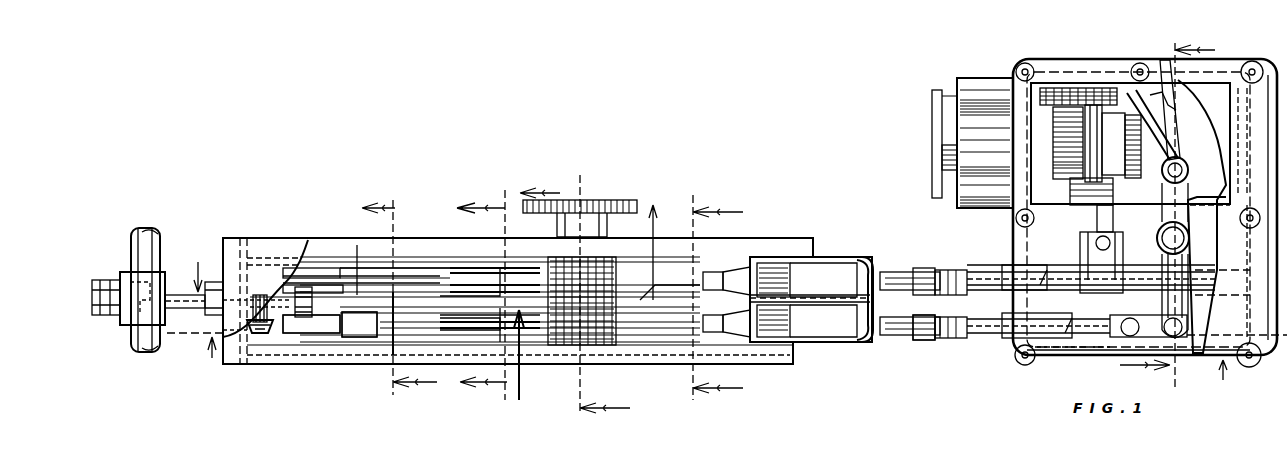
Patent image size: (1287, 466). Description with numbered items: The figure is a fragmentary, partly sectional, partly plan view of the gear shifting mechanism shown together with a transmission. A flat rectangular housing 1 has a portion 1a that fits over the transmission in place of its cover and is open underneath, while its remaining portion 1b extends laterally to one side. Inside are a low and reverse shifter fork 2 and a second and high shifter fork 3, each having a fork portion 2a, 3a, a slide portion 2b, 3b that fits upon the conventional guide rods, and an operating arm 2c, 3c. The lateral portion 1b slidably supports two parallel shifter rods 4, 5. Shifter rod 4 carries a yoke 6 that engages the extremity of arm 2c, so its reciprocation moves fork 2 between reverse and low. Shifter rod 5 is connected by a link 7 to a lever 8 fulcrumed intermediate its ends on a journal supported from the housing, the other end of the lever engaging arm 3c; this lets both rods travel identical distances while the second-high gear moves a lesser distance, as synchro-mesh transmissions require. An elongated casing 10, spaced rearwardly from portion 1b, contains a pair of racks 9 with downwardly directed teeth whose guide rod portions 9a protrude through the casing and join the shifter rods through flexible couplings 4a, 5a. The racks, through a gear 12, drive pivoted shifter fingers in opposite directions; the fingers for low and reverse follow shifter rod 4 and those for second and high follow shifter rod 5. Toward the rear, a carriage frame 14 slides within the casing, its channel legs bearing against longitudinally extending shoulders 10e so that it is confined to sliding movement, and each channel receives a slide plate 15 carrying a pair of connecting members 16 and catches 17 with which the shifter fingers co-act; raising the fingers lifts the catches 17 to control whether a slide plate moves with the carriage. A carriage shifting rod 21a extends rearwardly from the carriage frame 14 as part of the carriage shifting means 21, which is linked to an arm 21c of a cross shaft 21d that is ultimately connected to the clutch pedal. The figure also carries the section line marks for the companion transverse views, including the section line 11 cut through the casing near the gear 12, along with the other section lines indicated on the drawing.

The housing 1 is at (1005, 205).
The housing portion 1a is at (1040, 148).
The laterally disposed portion of the housing 1b is at (1080, 345).
The low and reverse shifter fork 2 is at (1065, 185).
The fork portion 2a is at (1090, 105).
The slide portion 2b is at (1093, 175).
The operating arm 2c is at (1095, 240).
The second and high shifter fork 3 is at (1200, 122).
The fork portion 3a is at (1130, 182).
The slide portion 3b is at (1176, 100).
The operating arm 3c is at (1182, 162).
The shifter rod 4 is at (985, 272).
The flexible coupling 4a is at (945, 272).
The shifter rod 5 is at (990, 322).
The flexible coupling 5a is at (945, 335).
The yoke 6 is at (1100, 275).
The link 7 is at (1150, 318).
The lever 8 is at (1190, 240).
The rack 9 is at (860, 278).
The guide rod portion 9a is at (920, 275).
The casing 10 is at (727, 301).
The longitudinally extending shoulder 10e is at (300, 345).
The gear 11 is at (579, 298).
The gear 12 is at (482, 296).
The carriage frame 14 is at (265, 320).
The slide plate 15 is at (399, 296).
The connecting member 16 is at (375, 325).
The catch 17 is at (330, 275).
The carriage shifting means 21 is at (142, 250).
The carriage shifting rod 21a is at (183, 296).
The arm of cross shaft 21c is at (100, 290).
The cross shaft 21d is at (142, 238).